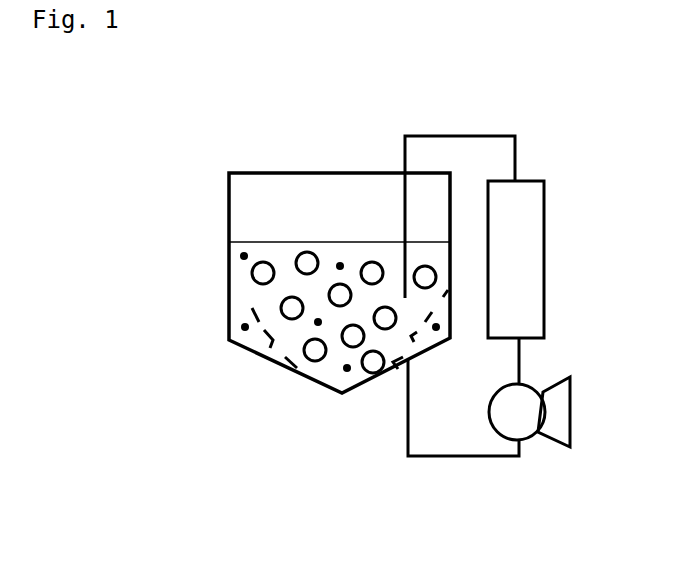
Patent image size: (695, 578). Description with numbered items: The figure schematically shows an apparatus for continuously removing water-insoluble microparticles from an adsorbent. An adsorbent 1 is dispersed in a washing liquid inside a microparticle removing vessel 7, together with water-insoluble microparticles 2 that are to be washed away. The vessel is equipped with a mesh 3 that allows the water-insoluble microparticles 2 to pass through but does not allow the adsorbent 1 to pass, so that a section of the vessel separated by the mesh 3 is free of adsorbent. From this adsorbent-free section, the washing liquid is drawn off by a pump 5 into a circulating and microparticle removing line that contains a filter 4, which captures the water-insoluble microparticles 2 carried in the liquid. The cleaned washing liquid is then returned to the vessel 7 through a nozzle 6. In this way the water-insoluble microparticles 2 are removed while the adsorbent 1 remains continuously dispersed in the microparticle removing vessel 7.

The adsorbent 1 is at (275, 312).
The water-insoluble microparticle 2 is at (228, 342).
The mesh for removing water-insoluble microparticles 3 is at (283, 405).
The filter 4 is at (564, 287).
The pump 5 is at (505, 458).
The nozzle 6 is at (371, 202).
The microparticle removing vessel 7 is at (225, 198).